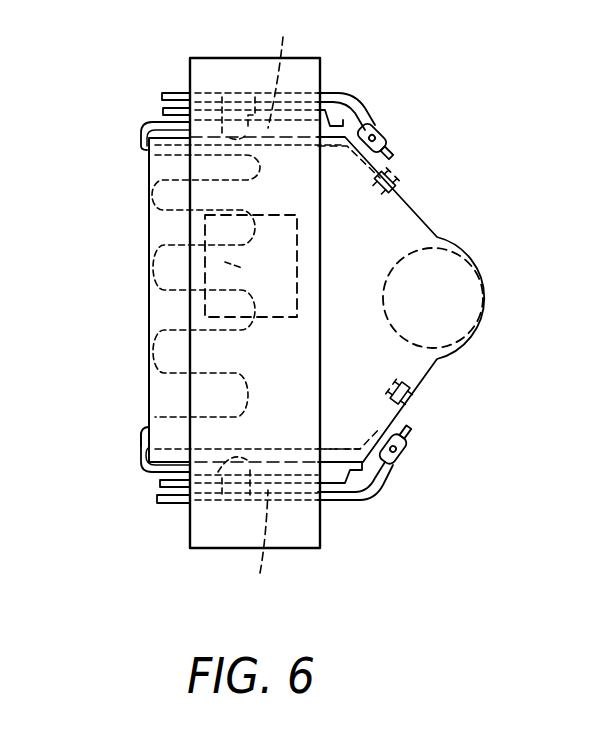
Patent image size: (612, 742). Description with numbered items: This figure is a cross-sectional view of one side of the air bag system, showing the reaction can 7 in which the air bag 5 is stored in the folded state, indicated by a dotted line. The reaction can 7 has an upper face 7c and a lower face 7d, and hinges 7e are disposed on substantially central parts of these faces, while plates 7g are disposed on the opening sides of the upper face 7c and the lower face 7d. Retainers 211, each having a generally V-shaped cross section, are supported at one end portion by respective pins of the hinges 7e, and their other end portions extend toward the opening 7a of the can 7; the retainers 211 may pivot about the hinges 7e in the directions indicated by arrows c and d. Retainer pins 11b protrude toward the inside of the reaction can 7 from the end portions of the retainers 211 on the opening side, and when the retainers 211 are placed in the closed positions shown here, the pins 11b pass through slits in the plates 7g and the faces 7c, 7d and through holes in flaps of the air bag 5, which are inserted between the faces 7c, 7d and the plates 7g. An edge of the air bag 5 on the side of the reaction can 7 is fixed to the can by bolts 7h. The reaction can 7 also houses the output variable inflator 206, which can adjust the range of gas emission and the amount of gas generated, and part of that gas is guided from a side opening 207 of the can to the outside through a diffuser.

The air bag 5 is at (142, 433).
The reaction can 7 is at (147, 177).
The opening 7a is at (160, 297).
The upper face 7c is at (158, 122).
The lower face 7d is at (156, 470).
The hinge 7e is at (385, 128).
The plate 7g is at (168, 110).
The bolt 7h is at (400, 182).
The retainer pin 11b is at (270, 306).
The output variable inflator 206 is at (465, 258).
The side opening 207 is at (203, 248).
The retainer 211 is at (170, 93).
The arrow c is at (327, 88).
The arrow d is at (337, 512).